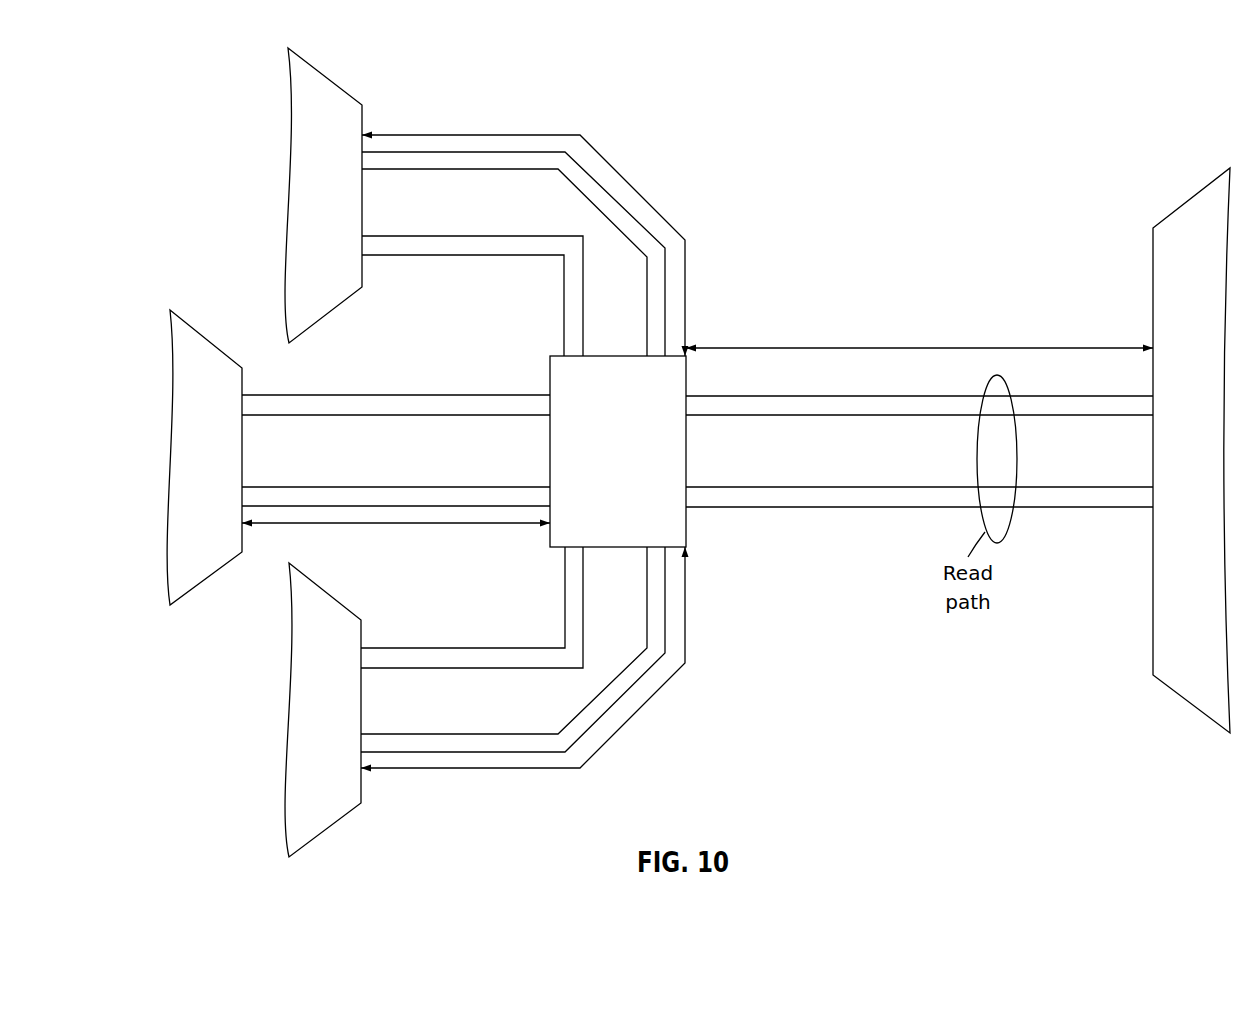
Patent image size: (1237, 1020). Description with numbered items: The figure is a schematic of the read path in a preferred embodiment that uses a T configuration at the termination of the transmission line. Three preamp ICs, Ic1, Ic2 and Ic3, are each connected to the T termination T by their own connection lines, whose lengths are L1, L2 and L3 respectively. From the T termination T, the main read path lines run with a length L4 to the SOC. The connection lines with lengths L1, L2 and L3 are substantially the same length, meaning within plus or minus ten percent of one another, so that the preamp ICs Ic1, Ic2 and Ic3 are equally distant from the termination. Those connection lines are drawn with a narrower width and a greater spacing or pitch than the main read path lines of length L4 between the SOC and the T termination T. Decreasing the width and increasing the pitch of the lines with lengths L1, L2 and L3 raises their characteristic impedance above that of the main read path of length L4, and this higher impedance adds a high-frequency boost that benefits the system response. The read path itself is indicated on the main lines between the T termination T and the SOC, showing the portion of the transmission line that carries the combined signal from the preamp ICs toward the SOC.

The preamp IC Ic1 is at (323, 195).
The preamp IC Ic2 is at (204, 457).
The preamp IC Ic3 is at (323, 710).
The T termination T is at (618, 451).
The element SOC is at (1191, 450).
The connection line length L1 is at (525, 230).
The connection line length L2 is at (396, 542).
The connection line length L3 is at (525, 674).
The main read path line length L4 is at (919, 333).